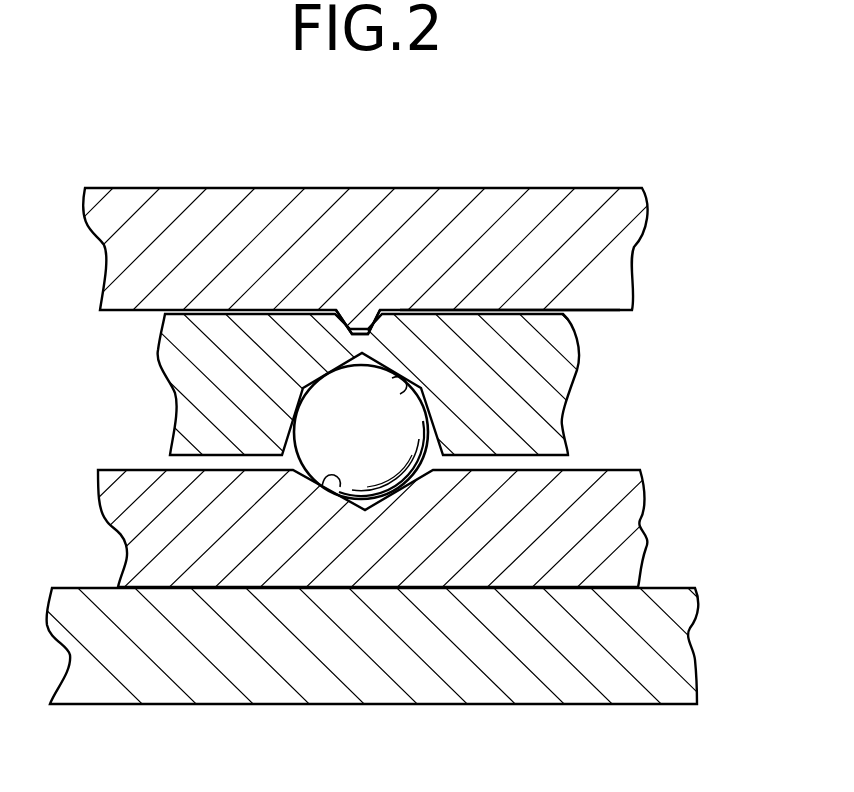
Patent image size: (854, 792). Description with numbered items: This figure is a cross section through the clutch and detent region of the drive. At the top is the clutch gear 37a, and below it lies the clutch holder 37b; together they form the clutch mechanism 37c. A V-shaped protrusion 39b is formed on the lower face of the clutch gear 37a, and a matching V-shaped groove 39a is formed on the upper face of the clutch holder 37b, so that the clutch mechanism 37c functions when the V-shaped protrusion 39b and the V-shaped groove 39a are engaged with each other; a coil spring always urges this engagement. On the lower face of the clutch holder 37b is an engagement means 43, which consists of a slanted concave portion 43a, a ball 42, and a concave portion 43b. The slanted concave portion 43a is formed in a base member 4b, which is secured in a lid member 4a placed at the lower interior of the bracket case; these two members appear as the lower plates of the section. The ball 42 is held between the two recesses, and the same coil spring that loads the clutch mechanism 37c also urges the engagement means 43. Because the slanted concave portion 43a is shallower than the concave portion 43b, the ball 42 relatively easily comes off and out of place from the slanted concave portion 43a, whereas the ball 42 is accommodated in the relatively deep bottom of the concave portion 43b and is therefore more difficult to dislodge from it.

The lid member 4a is at (546, 650).
The base member 4b is at (553, 518).
The clutch gear 37a is at (538, 223).
The clutch holder 37b is at (522, 382).
The clutch mechanism 37c is at (396, 270).
The V-shaped groove 39a is at (340, 324).
The V-shaped protrusion 39b is at (370, 326).
The ball 42 is at (347, 420).
The engagement means 43 is at (447, 440).
The slanted concave portion 43a is at (322, 480).
The concave portion 43b is at (404, 384).